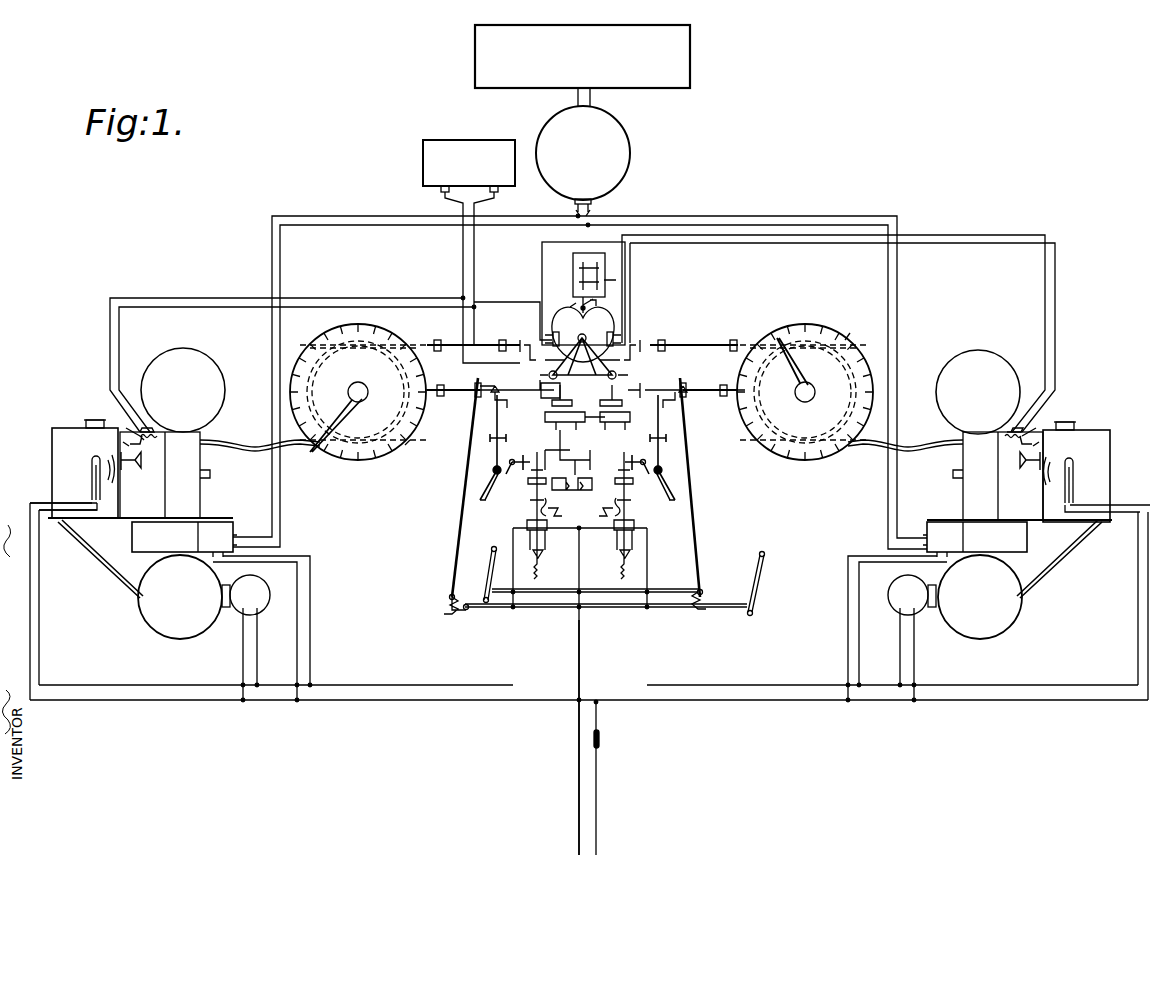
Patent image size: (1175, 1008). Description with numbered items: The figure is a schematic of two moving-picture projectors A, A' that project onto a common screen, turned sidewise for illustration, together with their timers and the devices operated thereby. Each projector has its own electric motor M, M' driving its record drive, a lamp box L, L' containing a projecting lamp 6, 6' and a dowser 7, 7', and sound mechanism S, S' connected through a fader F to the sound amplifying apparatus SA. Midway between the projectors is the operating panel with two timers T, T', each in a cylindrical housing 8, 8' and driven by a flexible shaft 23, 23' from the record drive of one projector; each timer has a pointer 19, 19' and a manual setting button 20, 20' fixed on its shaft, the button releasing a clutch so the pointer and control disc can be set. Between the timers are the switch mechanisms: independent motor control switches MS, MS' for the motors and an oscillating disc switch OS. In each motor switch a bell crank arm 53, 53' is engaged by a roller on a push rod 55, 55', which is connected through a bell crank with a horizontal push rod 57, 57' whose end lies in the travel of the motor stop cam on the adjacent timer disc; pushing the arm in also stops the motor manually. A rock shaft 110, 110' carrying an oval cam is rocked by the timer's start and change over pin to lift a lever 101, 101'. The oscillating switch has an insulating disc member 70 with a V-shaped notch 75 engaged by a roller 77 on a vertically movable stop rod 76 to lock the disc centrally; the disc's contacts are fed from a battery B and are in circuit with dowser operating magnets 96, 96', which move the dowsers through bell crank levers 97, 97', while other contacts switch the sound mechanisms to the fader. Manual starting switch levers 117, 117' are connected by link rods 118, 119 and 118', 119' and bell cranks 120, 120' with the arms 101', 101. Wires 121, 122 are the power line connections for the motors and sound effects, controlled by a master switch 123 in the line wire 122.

The sound amplifying apparatus SA is at (582, 56).
The fader F is at (583, 161).
The battery B is at (469, 166).
The lamp box L is at (73, 469).
The lamp box L' is at (1088, 472).
The projecting lamp 6 is at (72, 482).
The projecting lamp 6' is at (1097, 484).
The dowser 7 is at (137, 458).
The dowser 7' is at (1025, 480).
The dowser operating magnet 96 is at (172, 433).
The dowser operating magnet 96' is at (989, 435).
The bell crank lever 97 is at (117, 417).
The bell crank lever 97' is at (1060, 425).
The flexible shaft 23 is at (260, 436).
The flexible shaft 23' is at (905, 436).
The timer T is at (360, 407).
The timer T' is at (805, 407).
The pointer 19 is at (336, 413).
The pointer 19' is at (806, 361).
The manual setting button 20 is at (366, 382).
The manual setting button 20' is at (817, 397).
The housing 8 is at (413, 445).
The housing 8' is at (856, 327).
The sound mechanism S is at (167, 539).
The sound mechanism S' is at (987, 539).
The projector A is at (140, 592).
The projector A' is at (1020, 590).
The motor M is at (252, 638).
The motor M' is at (901, 638).
The rock shaft 110 is at (481, 339).
The rock shaft 110' is at (681, 339).
The horizontal push rod 57 is at (454, 399).
The horizontal push rod 57' is at (709, 399).
The oscillating disc switch OS is at (552, 326).
The stop rod 76 is at (578, 270).
The V-shaped notch 75 is at (580, 300).
The roller 77 is at (598, 305).
The oscillating disc member 70 is at (604, 325).
The lever 101 is at (559, 410).
The lever 101' is at (632, 410).
The push rod 55 is at (491, 434).
The push rod 55' is at (691, 434).
The bell crank arm 53 is at (504, 486).
The bell crank arm 53' is at (656, 478).
The motor control switch MS is at (533, 515).
The motor control switch MS' is at (637, 515).
The link rod 119 is at (450, 487).
The link rod 119' is at (711, 487).
The manual starting switch lever 117 is at (485, 575).
The manual starting switch lever 117' is at (775, 584).
The link rod 118 is at (595, 576).
The link rod 118' is at (606, 619).
The bell crank 120 is at (714, 594).
The bell crank 120' is at (448, 615).
The power line wire 121 is at (578, 810).
The power line wire 122 is at (598, 820).
The master switch 123 is at (600, 737).